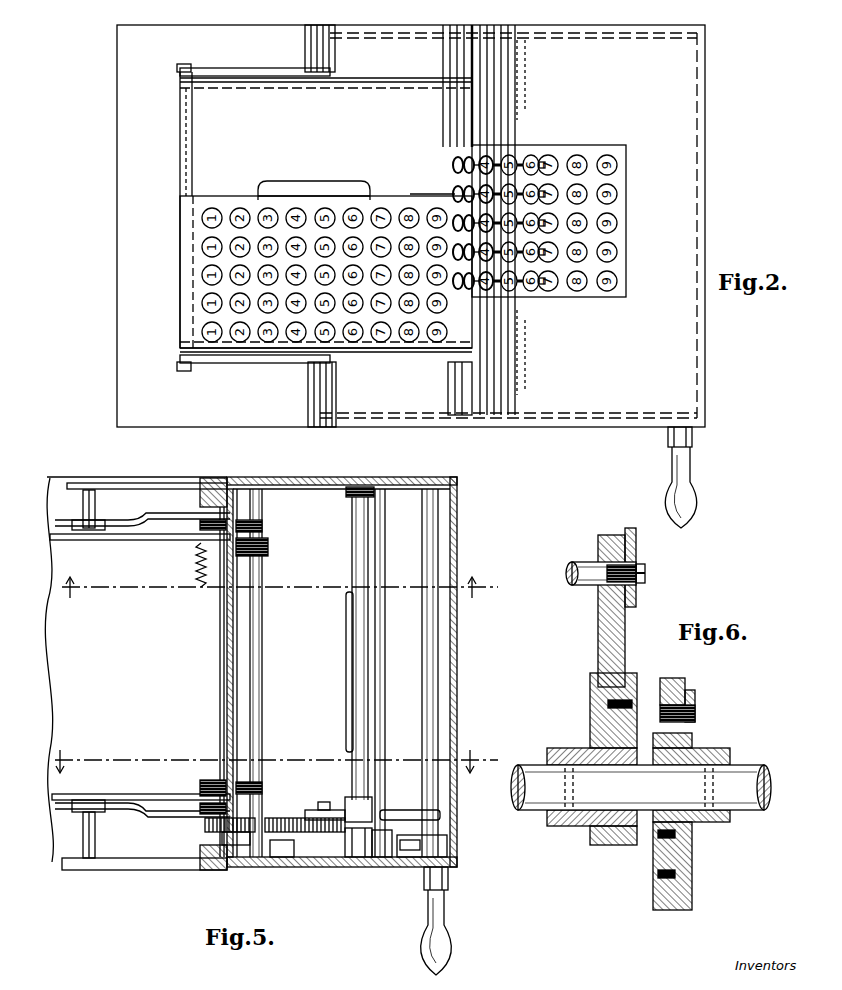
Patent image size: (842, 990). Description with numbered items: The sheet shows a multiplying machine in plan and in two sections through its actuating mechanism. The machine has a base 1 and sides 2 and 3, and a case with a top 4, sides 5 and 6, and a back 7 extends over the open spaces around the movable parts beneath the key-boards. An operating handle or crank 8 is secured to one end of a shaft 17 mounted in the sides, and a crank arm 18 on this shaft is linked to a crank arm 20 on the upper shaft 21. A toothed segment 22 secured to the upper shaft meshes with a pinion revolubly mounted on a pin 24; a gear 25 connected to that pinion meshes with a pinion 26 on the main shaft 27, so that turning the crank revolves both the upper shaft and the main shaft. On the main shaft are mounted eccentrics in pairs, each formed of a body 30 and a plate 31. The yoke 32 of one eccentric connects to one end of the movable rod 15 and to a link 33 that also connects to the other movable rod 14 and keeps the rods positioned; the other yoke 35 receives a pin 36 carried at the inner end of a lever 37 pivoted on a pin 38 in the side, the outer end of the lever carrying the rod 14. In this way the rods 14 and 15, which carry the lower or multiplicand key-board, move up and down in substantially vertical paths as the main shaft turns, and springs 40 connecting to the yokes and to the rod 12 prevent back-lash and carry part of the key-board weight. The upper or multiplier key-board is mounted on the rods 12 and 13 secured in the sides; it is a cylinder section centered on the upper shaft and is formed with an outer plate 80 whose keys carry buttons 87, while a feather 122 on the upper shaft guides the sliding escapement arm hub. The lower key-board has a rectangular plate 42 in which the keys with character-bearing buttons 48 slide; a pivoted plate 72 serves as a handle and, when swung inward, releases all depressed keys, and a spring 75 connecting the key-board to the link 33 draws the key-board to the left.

In FIG. 2, the base 1 is at (411, 226).
In FIG. 5, the side 2 is at (278, 857).
In FIG. 5, the side 3 is at (317, 490).
In FIG. 2, the top 4 is at (501, 226).
In FIG. 5, the top 4 is at (206, 490).
In FIG. 5, the side 5 is at (305, 870).
In FIG. 5, the side 6 is at (336, 478).
In FIG. 5, the back 7 is at (457, 540).
In FIG. 2, the operating handle or crank 8 is at (696, 440).
In FIG. 5, the operating handle or crank 8 is at (450, 885).
In FIG. 5, the rod 12 is at (263, 680).
In FIG. 5, the rod 13 is at (381, 663).
In FIG. 2, the movable rod 14 is at (186, 143).
In FIG. 5, the movable rod 15 is at (228, 735).
In FIG. 6, the movable rod 15 is at (580, 590).
In FIG. 5, the shaft 17 is at (433, 706).
In FIG. 5, the crank arm 18 is at (430, 845).
In FIG. 5, the crank arm 20 is at (390, 870).
In FIG. 5, the upper shaft 21 is at (358, 557).
In FIG. 5, the toothed segment 22 is at (337, 810).
In FIG. 5, the pin 24 is at (341, 870).
In FIG. 5, the gear 25 is at (285, 806).
In FIG. 5, the pinion 26 is at (208, 830).
In FIG. 5, the main shaft 27 is at (221, 695).
In FIG. 6, the main shaft 27 is at (540, 818).
In FIG. 6, the body 30 is at (598, 737).
In FIG. 5, the plate 31 is at (262, 547).
In FIG. 6, the plate 31 is at (633, 698).
In FIG. 6, the yoke 32 is at (600, 626).
In FIG. 2, the link 33 is at (295, 84).
In FIG. 5, the link 33 is at (124, 797).
In FIG. 6, the link 33 is at (637, 548).
In FIG. 5, the yoke 35 is at (202, 526).
In FIG. 6, the yoke 35 is at (684, 680).
In FIG. 6, the pin 36 is at (697, 713).
In FIG. 2, the lever 37 is at (270, 70).
In FIG. 5, the lever 37 is at (149, 520).
In FIG. 6, the lever 37 is at (697, 693).
In FIG. 5, the pin 38 is at (90, 508).
In FIG. 5, the spring 40 is at (256, 524).
In FIG. 2, the rectangular plate 42 is at (326, 263).
In FIG. 2, the button 48 is at (384, 209).
In FIG. 2, the plate 72 is at (342, 190).
In FIG. 5, the spring 75 is at (197, 570).
In FIG. 2, the outer plate 80 is at (518, 228).
In FIG. 2, the button 87 is at (575, 292).
In FIG. 5, the feather 122 is at (352, 659).